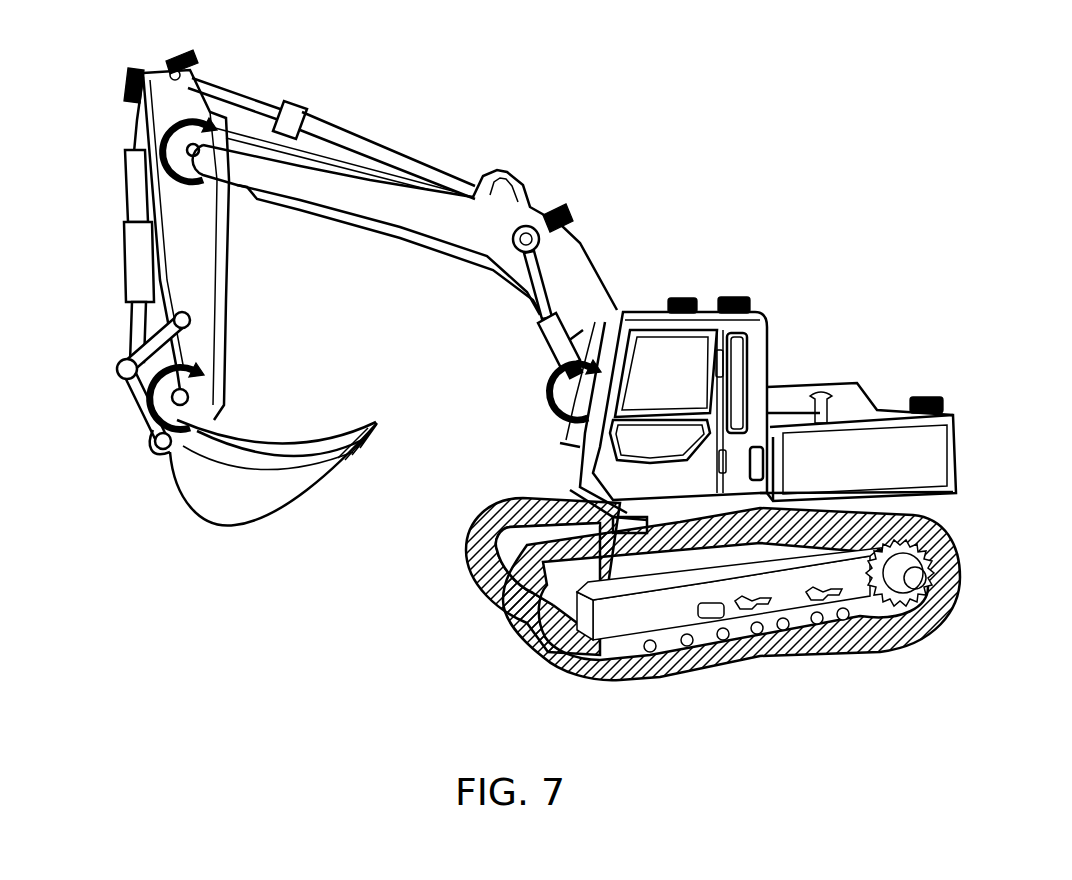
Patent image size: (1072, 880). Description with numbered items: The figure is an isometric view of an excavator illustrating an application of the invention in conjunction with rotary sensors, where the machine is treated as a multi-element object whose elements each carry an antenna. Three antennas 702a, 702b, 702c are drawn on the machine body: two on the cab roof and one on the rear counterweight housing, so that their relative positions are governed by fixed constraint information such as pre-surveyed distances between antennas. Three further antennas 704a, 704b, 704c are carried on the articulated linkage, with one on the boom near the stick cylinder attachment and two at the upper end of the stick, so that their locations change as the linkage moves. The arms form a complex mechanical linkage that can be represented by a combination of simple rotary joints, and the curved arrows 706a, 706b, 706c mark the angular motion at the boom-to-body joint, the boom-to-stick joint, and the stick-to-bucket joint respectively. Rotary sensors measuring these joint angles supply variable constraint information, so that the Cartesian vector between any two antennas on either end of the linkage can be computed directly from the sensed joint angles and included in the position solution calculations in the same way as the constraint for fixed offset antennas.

The position sensor on machine body (cab roof) 702a is at (670, 297).
The position sensor on machine body (cab roof) 702b is at (747, 297).
The position sensor on machine body (counterweight) 702c is at (930, 393).
The sensor on boom 704a is at (570, 230).
The sensor on stick 704b is at (187, 55).
The sensor on stick 704c is at (125, 78).
The boom joint rotation 706a is at (557, 403).
The stick joint rotation 706b is at (127, 157).
The bucket joint rotation 706c is at (148, 400).